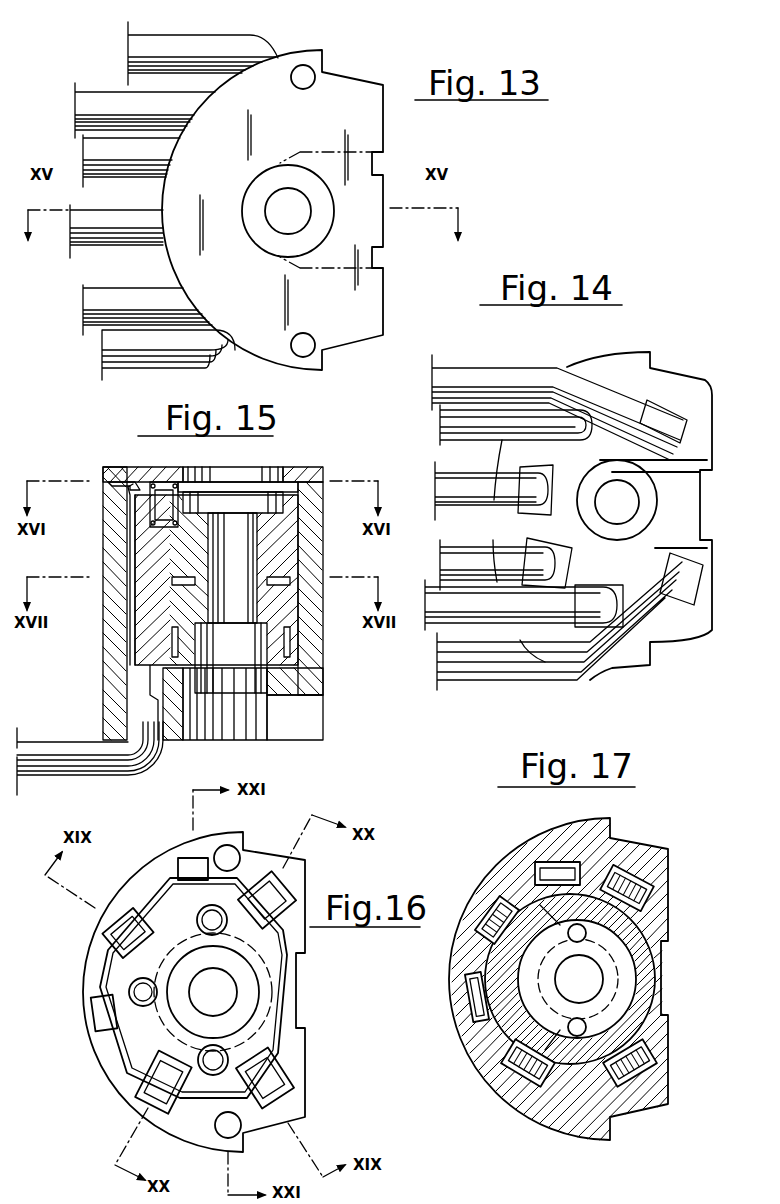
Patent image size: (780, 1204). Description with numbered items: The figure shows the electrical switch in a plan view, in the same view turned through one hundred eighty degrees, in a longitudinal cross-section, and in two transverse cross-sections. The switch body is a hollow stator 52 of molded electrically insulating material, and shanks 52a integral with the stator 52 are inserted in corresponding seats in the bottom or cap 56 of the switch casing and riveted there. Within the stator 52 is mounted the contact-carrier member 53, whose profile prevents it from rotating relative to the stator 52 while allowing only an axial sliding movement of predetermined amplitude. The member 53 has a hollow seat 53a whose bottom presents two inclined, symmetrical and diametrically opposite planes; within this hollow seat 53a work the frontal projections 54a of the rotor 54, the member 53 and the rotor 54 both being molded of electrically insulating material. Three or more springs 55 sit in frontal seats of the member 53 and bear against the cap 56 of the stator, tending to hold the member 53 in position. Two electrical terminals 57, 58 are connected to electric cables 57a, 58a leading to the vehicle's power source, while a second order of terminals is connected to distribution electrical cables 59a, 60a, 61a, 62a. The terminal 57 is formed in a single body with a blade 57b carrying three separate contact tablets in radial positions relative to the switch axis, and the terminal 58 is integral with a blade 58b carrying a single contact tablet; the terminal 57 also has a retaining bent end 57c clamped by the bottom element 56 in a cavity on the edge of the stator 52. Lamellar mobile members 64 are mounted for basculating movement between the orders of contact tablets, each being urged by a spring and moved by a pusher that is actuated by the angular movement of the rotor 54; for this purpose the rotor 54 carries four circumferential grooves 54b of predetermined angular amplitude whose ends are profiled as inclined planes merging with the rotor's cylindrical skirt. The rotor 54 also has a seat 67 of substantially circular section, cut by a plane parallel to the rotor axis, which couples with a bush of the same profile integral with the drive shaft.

In FIG. 13, the stator 52 is at (272, 210).
In FIG. 14, the stator 52 is at (682, 625).
In FIG. 15, the stator 52 is at (112, 703).
In FIG. 16, the stator 52 is at (100, 1040).
In FIG. 17, the stator 52 is at (462, 1007).
In FIG. 13, the shanks 52a is at (305, 73).
In FIG. 16, the shanks 52a is at (228, 858).
In FIG. 15, the contact-carrier member 53 is at (148, 655).
In FIG. 16, the contact-carrier member 53 is at (130, 965).
In FIG. 17, the contact-carrier member 53 is at (508, 1025).
In FIG. 17, the hollow seat 53a is at (537, 952).
In FIG. 15, the rotor 54 is at (280, 612).
In FIG. 17, the frontal projections 54a is at (590, 1032).
In FIG. 14, the circumferential grooves 54b is at (633, 472).
In FIG. 15, the circumferential grooves 54b is at (172, 637).
In FIG. 15, the springs 55 is at (150, 488).
In FIG. 16, the springs 55 is at (198, 918).
In FIG. 13, the cap 56 is at (383, 127).
In FIG. 15, the cap 56 is at (162, 478).
In FIG. 15, the electrical terminal 57 is at (128, 535).
In FIG. 16, the electrical terminal 57 is at (103, 1005).
In FIG. 13, the electric cable 57a is at (92, 230).
In FIG. 14, the electric cable 57a is at (445, 490).
In FIG. 15, the electric cable 57a is at (55, 760).
In FIG. 16, the blade 57b is at (125, 1092).
In FIG. 15, the retaining bent end 57c is at (112, 484).
In FIG. 16, the electrical terminal 58 is at (190, 866).
In FIG. 13, the electric cable 58a is at (95, 105).
In FIG. 14, the electric cable 58a is at (450, 608).
In FIG. 16, the blade 58b is at (260, 884).
In FIG. 13, the distribution electrical cable 59a is at (110, 153).
In FIG. 14, the distribution electrical cable 59a is at (458, 565).
In FIG. 13, the distribution electrical cable 60a is at (128, 352).
In FIG. 14, the distribution electrical cable 60a is at (452, 382).
In FIG. 13, the distribution electrical cable 61a is at (98, 302).
In FIG. 14, the distribution electrical cable 61a is at (447, 420).
In FIG. 13, the distribution electrical cable 62a is at (152, 50).
In FIG. 14, the distribution electrical cable 62a is at (462, 668).
In FIG. 17, the lamellar mobile members 64 is at (612, 882).
In FIG. 14, the seat 67 is at (648, 500).
In FIG. 15, the seat 67 is at (252, 685).